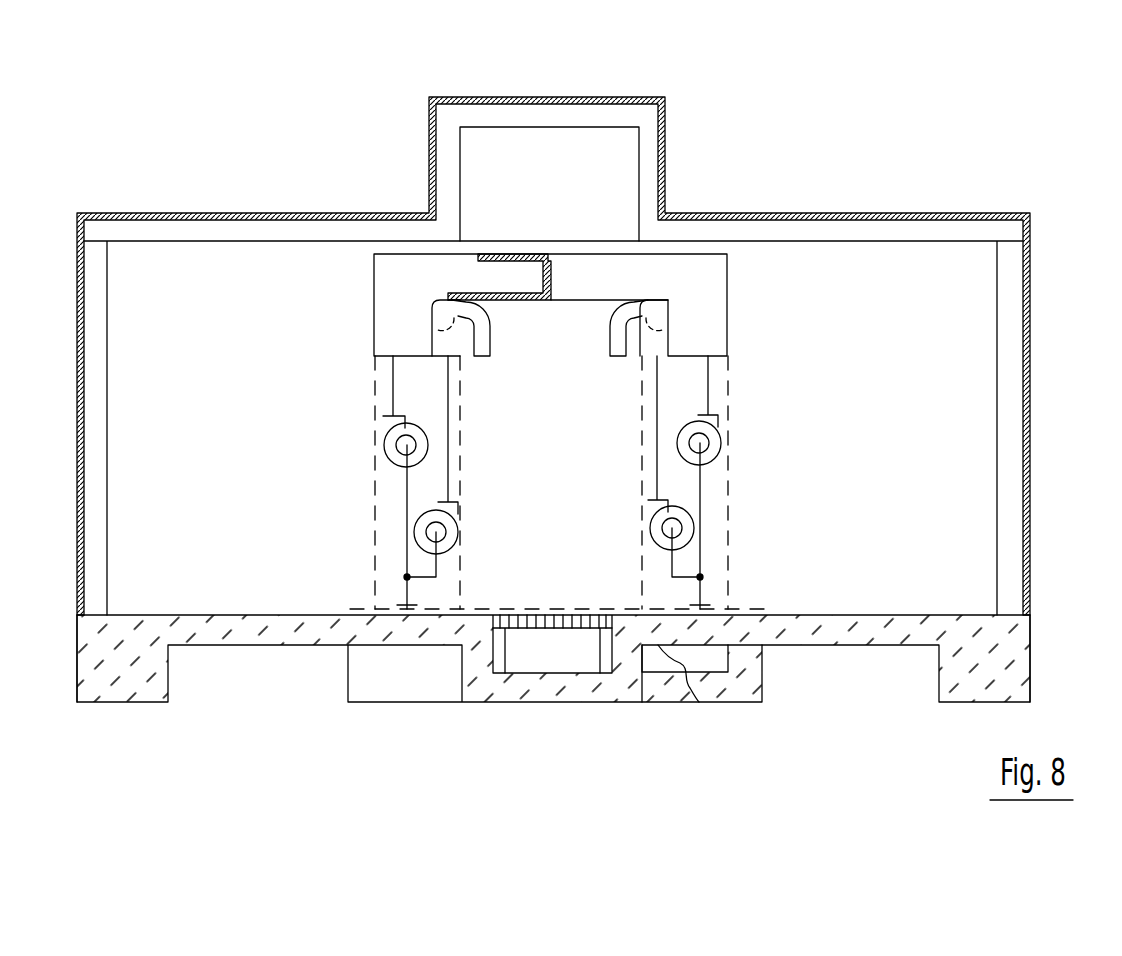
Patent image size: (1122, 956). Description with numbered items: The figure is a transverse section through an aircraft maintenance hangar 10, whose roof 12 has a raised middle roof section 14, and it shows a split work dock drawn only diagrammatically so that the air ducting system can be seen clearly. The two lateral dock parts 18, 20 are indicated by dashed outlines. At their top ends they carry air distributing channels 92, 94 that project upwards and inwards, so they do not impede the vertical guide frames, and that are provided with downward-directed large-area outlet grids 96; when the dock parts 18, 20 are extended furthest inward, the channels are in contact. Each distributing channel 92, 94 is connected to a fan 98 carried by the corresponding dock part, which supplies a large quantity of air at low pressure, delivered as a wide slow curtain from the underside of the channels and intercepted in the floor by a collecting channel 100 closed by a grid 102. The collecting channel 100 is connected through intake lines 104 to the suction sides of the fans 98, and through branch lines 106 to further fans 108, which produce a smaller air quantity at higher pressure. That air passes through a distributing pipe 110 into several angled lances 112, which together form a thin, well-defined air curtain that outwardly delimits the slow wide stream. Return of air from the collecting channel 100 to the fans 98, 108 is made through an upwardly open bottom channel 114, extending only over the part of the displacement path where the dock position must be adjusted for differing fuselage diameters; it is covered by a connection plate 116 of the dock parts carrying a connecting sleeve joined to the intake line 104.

The aircraft maintenance hangar 10 is at (593, 353).
The roof 12 is at (920, 212).
The raised middle roof section 14 is at (531, 97).
The lateral dock part 18 is at (352, 467).
The lateral dock part 20 is at (742, 490).
The air distributing channel 92 is at (496, 240).
The air distributing channel 94 is at (585, 272).
The outlet grid 96 is at (508, 293).
The fan 98 is at (392, 438).
The collecting channel 100 is at (513, 690).
The grid 102 is at (583, 615).
The intake line 104 is at (408, 490).
The branch line 106 is at (420, 568).
The further fan 108 is at (418, 531).
The distributing pipe 110 is at (667, 334).
The angled lance 112 is at (627, 343).
The bottom channel 114 is at (728, 660).
The connection plate 116 is at (755, 609).